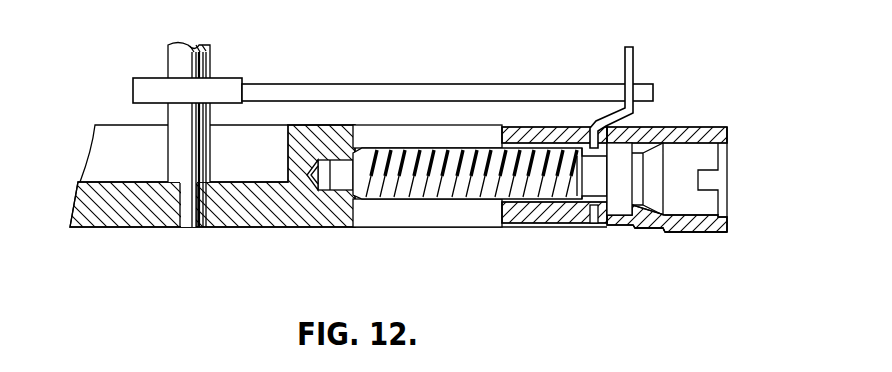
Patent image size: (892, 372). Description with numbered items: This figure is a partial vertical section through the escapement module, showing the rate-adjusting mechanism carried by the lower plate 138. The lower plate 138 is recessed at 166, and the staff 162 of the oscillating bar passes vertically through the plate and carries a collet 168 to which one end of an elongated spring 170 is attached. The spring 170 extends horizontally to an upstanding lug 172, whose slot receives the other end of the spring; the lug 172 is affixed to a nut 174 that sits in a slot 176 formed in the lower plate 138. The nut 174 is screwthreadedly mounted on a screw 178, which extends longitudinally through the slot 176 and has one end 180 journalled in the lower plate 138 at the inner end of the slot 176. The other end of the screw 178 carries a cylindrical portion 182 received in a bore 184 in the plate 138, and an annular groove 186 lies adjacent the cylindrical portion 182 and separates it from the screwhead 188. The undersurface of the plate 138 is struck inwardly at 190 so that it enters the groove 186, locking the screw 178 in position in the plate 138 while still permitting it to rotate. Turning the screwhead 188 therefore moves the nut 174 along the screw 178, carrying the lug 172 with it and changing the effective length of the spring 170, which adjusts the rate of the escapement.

The lower plate 138 is at (722, 232).
The staff 162 is at (168, 158).
The recess 166 is at (248, 182).
The collet 168 is at (133, 93).
The elongated spring 170 is at (371, 96).
The upstanding lug 172 is at (630, 72).
The nut 174 is at (533, 215).
The slot 176 is at (388, 215).
The screw 178 is at (447, 202).
The end of screw 180 is at (333, 178).
The cylindrical portion 182 is at (617, 207).
The bore 184 is at (703, 145).
The annular groove 186 is at (645, 230).
The screwhead 188 is at (678, 158).
The struck-in portion 190 is at (640, 228).